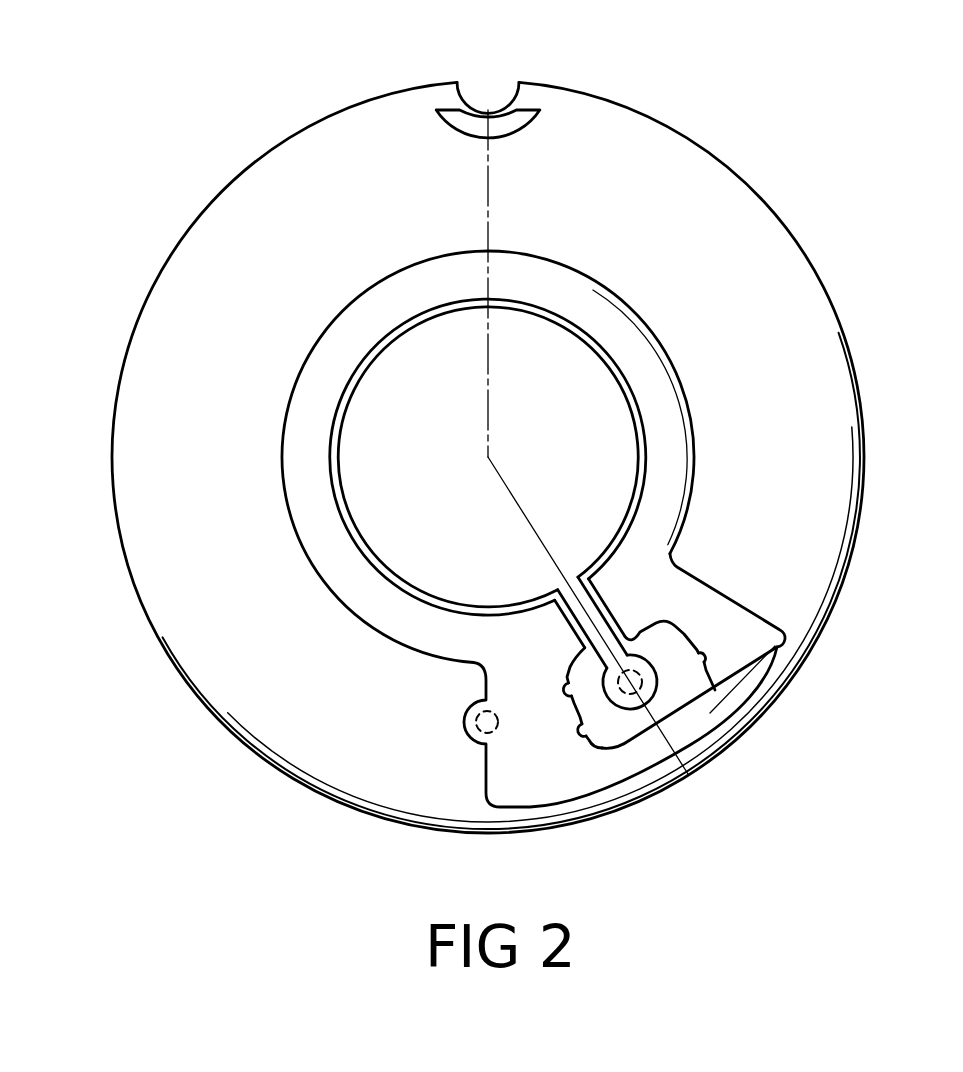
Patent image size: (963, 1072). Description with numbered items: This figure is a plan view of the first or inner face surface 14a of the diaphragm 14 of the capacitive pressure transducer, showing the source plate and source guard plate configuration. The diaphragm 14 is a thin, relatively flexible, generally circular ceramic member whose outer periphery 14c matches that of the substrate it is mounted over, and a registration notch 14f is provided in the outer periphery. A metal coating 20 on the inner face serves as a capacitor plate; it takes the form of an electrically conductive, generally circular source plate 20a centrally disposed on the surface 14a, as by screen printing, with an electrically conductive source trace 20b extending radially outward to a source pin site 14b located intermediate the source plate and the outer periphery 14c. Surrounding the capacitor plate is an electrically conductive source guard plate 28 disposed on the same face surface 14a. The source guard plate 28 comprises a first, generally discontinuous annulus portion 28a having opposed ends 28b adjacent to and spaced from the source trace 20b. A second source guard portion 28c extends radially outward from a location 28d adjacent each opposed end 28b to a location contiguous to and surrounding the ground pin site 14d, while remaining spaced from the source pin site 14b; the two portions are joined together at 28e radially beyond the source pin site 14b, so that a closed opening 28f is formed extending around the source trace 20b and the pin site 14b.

The diaphragm 14 is at (238, 170).
The first or inner face surface 14a is at (168, 602).
The source pin site 14b is at (633, 697).
The outer periphery 14c is at (250, 752).
The ground pin site 14d is at (474, 733).
The registration notch 14f is at (510, 100).
The metal coating (source plate / capacitor plate) 20 is at (355, 370).
The source plate 20a is at (452, 440).
The source trace 20b is at (589, 639).
The source guard plate 28 is at (330, 596).
The first discontinuous annulus portion 28a is at (325, 545).
The opposed ends 28b is at (633, 593).
The second source guard portion 28c is at (722, 595).
The location adjacent each opposed end 28d is at (573, 707).
The junction location 28e is at (692, 720).
The closed opening 28f is at (588, 746).